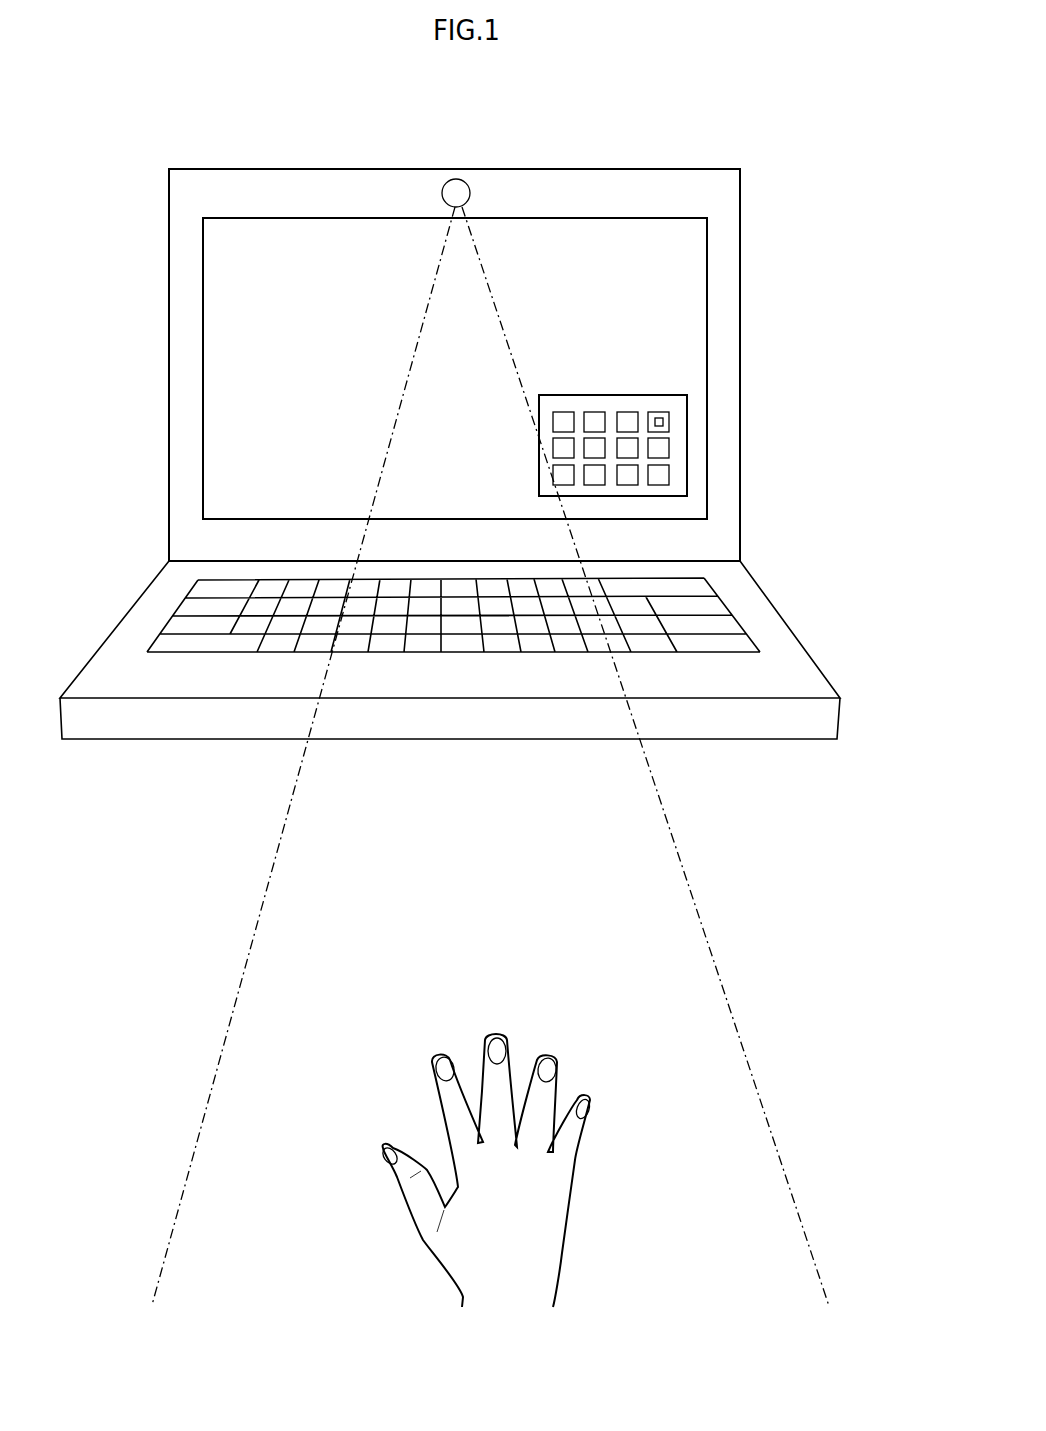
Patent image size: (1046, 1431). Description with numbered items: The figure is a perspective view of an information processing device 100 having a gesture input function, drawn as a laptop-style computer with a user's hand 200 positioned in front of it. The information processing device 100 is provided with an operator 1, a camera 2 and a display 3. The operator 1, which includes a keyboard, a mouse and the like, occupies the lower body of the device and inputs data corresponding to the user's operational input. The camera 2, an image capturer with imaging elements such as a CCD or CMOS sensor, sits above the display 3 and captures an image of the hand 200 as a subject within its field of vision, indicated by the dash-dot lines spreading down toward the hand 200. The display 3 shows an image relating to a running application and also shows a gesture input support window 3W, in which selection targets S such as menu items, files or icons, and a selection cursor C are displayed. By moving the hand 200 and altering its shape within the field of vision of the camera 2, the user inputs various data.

The information processing device 100 is at (618, 168).
The operator 1 is at (750, 638).
The camera 2 is at (455, 178).
The display 3 is at (707, 320).
The gesture input support window 3W is at (688, 448).
The selection cursor C is at (670, 422).
The selection targets S is at (668, 475).
The hand 200 is at (562, 1257).